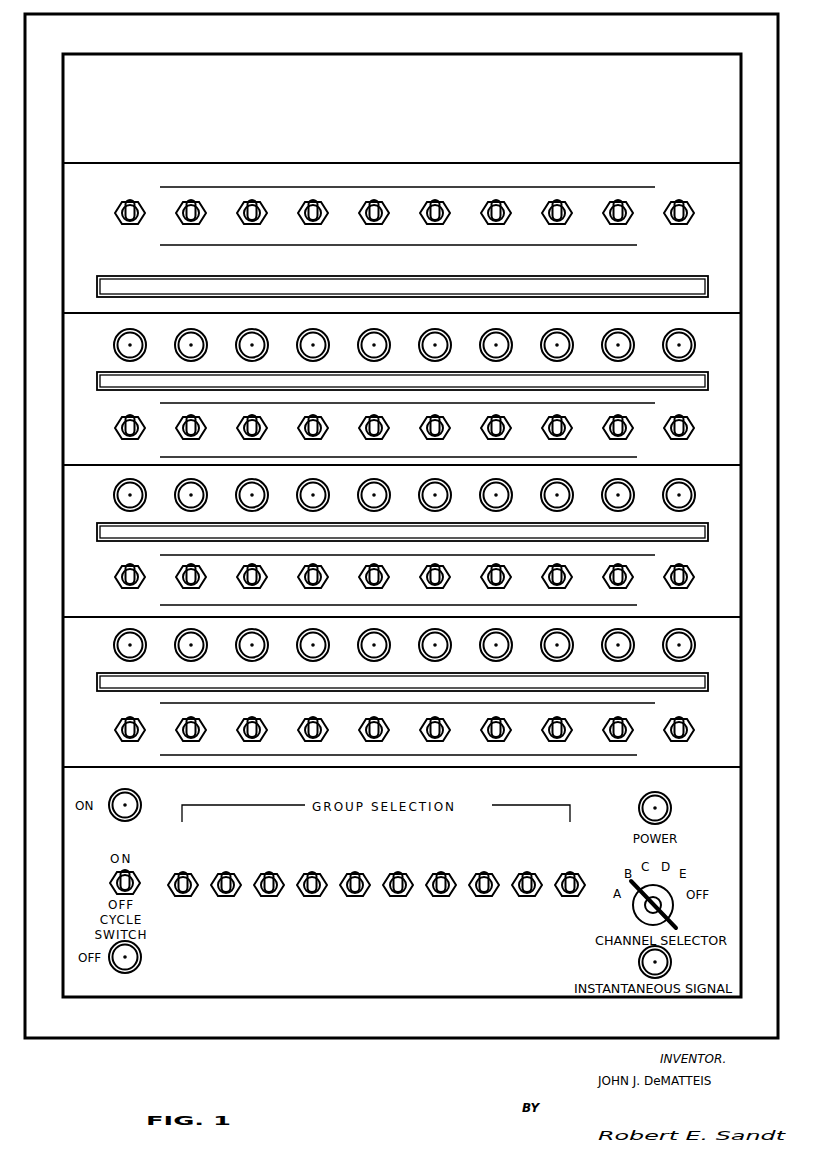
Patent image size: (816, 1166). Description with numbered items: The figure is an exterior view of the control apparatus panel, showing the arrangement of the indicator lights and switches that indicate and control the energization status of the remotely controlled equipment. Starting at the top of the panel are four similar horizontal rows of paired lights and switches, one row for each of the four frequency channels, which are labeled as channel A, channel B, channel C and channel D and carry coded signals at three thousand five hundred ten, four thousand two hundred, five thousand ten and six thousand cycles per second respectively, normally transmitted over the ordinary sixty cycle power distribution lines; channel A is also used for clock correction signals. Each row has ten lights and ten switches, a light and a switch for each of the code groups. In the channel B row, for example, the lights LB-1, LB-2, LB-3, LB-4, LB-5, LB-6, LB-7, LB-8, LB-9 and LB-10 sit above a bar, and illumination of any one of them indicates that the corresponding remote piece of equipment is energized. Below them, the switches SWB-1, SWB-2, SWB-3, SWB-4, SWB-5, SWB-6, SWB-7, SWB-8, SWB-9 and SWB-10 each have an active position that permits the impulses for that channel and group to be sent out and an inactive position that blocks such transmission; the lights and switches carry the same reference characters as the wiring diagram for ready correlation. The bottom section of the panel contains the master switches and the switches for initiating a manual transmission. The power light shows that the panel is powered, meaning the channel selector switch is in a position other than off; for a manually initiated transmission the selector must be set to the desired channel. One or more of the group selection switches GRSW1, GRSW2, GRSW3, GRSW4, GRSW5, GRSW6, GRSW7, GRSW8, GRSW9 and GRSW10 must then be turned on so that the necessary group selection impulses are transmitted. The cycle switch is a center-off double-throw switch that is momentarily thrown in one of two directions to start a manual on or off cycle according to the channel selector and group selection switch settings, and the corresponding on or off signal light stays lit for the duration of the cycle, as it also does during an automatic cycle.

The channel A is at (73, 226).
The channel B is at (72, 369).
The channel C is at (72, 527).
The channel D is at (73, 669).
The indicator light LB-1 is at (114, 346).
The indicator light LB-2 is at (175, 346).
The indicator light LB-3 is at (236, 346).
The indicator light LB-4 is at (297, 346).
The indicator light LB-5 is at (358, 346).
The indicator light LB-6 is at (419, 346).
The indicator light LB-7 is at (480, 346).
The indicator light LB-8 is at (541, 346).
The indicator light LB-9 is at (602, 346).
The indicator light LB-10 is at (663, 346).
The active/inactive switch SWB-1 is at (113, 430).
The active/inactive switch SWB-2 is at (174, 430).
The active/inactive switch SWB-3 is at (235, 430).
The active/inactive switch SWB-4 is at (296, 430).
The active/inactive switch SWB-5 is at (357, 430).
The active/inactive switch SWB-6 is at (418, 430).
The active/inactive switch SWB-7 is at (479, 430).
The active/inactive switch SWB-8 is at (540, 430).
The active/inactive switch SWB-9 is at (601, 430).
The active/inactive switch SWB-10 is at (662, 430).
The group selection switch GRSW1 is at (183, 904).
The group selection switch GRSW2 is at (226, 896).
The group selection switch GRSW3 is at (269, 904).
The group selection switch GRSW4 is at (312, 896).
The group selection switch GRSW5 is at (355, 904).
The group selection switch GRSW6 is at (398, 896).
The group selection switch GRSW7 is at (441, 904).
The group selection switch GRSW8 is at (484, 896).
The group selection switch GRSW9 is at (527, 904).
The group selection switch GRSW10 is at (570, 896).